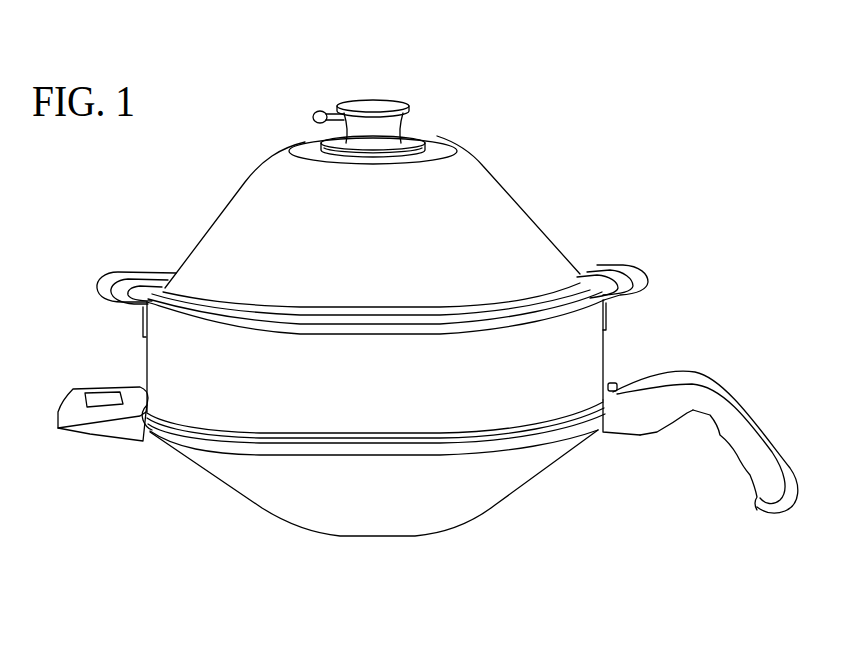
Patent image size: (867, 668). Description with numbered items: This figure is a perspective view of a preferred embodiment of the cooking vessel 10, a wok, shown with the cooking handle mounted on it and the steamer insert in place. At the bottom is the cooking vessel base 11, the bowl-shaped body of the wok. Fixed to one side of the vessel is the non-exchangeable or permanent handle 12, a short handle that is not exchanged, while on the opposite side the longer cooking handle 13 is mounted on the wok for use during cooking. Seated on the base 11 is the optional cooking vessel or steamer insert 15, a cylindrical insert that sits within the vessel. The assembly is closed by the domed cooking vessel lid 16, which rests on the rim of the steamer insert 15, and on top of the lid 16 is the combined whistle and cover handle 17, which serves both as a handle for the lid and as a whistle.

The cooking vessel 10 is at (614, 173).
The cooking vessel base 11 is at (340, 8).
The non-exchangeable or permanent handle 12 is at (90, 427).
The cooking handle 13 is at (646, 416).
The cooking vessel or steamer insert 15 is at (578, 375).
The cooking vessel lid 16 is at (238, 235).
The combined whistle and cover handle 17 is at (395, 127).